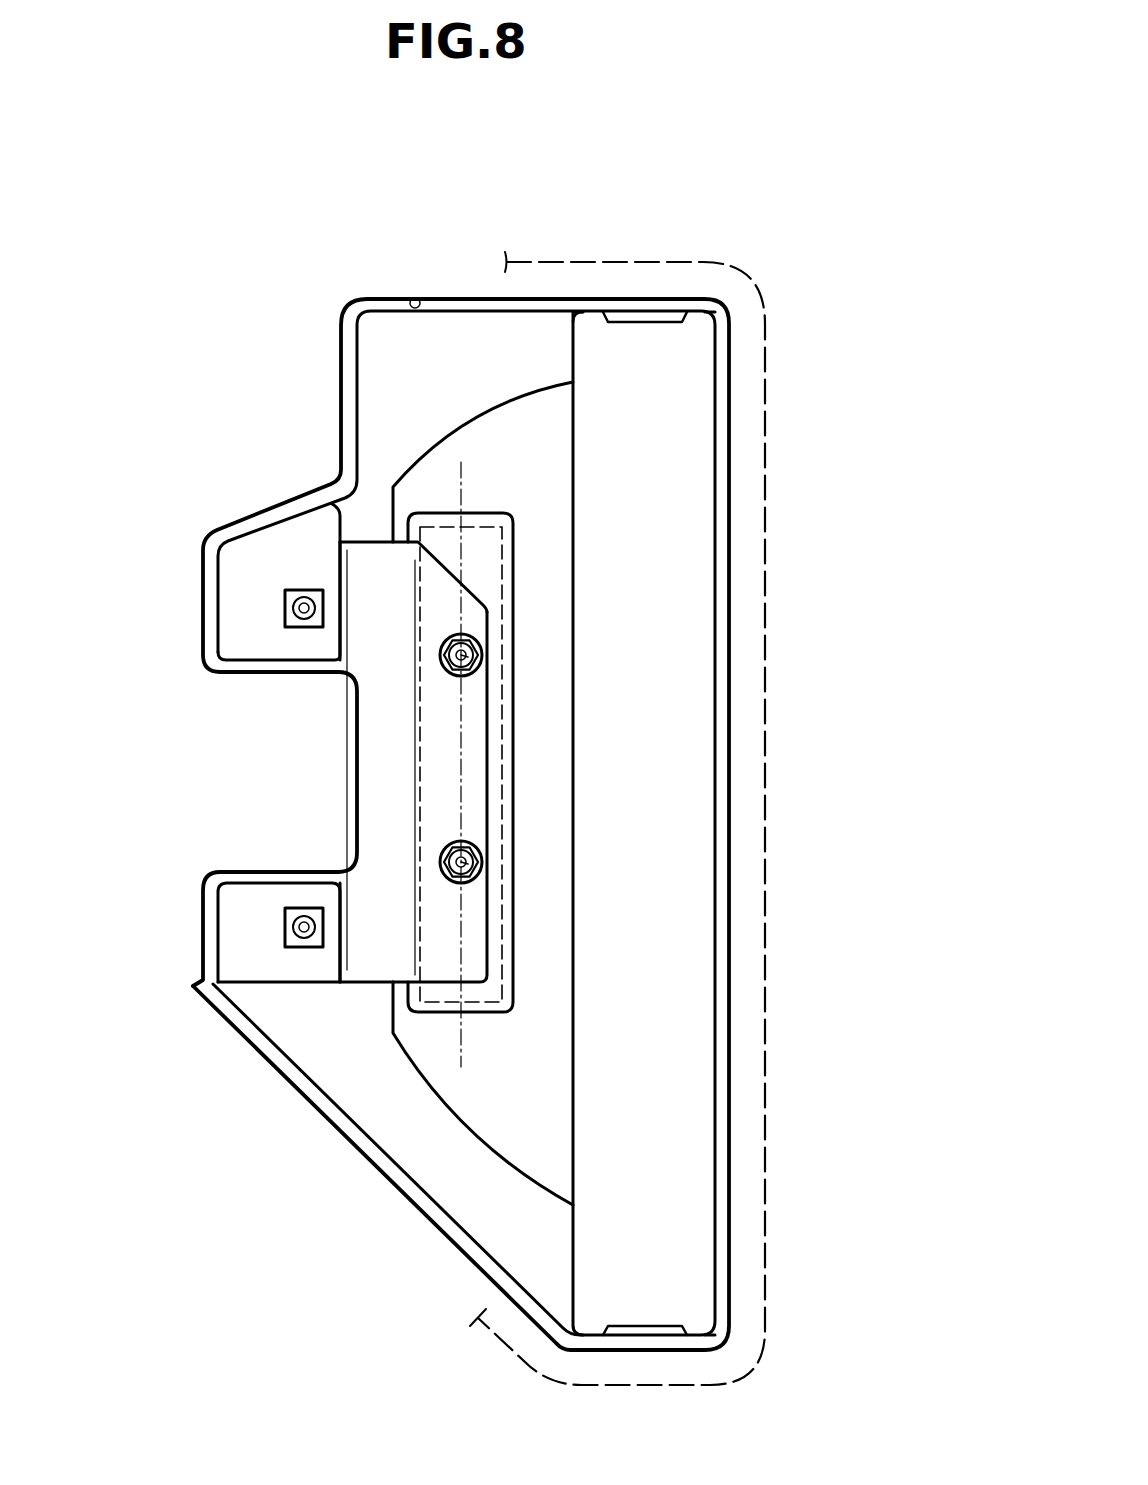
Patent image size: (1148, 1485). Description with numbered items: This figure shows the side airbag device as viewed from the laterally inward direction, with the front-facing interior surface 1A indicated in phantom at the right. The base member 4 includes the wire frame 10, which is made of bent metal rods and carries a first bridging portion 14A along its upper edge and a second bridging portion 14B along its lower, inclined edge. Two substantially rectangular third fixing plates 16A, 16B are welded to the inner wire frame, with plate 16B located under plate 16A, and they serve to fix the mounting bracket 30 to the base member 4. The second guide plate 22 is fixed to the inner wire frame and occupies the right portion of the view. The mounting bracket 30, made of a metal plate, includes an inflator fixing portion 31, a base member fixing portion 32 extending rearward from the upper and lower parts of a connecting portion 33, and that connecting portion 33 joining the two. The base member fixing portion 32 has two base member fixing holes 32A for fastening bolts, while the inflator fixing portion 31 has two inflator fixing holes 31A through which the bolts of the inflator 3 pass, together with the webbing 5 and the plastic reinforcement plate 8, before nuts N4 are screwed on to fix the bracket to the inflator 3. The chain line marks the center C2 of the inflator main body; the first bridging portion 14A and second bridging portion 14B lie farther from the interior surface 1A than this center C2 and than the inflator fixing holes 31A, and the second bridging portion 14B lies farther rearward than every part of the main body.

The base member 4 is at (214, 246).
The wire frame 10 is at (341, 286).
The first bridging portion 14A is at (415, 298).
The second bridging portion 14B is at (403, 1172).
The third fixing plate 16A is at (243, 610).
The third fixing plate 16B is at (245, 928).
The second guide plate 22 is at (680, 680).
The interior surface 1A is at (765, 776).
The webbing 5 is at (552, 385).
The center of the main body C2 is at (457, 478).
The inflator 3 is at (472, 525).
The reinforcement plate 8 is at (435, 515).
The mounting bracket 30 is at (373, 538).
The base member fixing portion 32 is at (345, 570).
The base member fixing hole 32A is at (307, 620).
The connecting portion 33 is at (387, 947).
The inflator fixing portion 31 is at (440, 950).
The inflator fixing hole 31A is at (480, 670).
The nut N4 is at (480, 643).